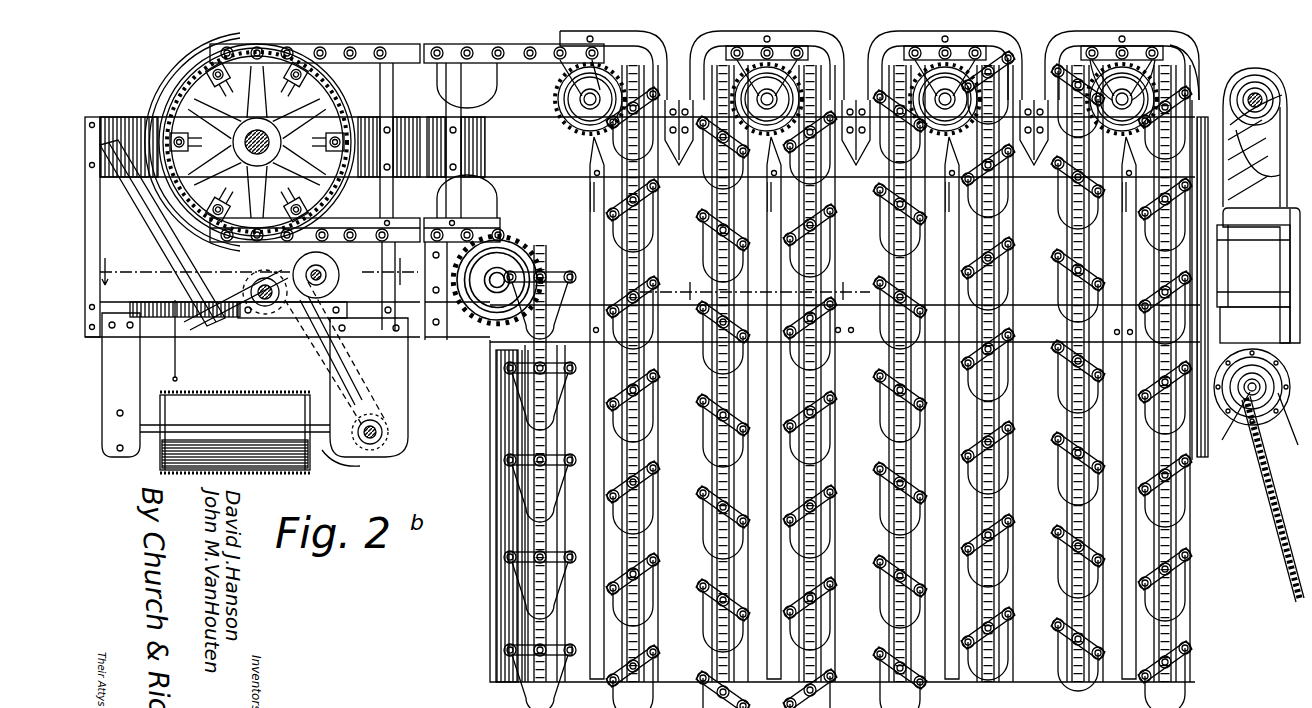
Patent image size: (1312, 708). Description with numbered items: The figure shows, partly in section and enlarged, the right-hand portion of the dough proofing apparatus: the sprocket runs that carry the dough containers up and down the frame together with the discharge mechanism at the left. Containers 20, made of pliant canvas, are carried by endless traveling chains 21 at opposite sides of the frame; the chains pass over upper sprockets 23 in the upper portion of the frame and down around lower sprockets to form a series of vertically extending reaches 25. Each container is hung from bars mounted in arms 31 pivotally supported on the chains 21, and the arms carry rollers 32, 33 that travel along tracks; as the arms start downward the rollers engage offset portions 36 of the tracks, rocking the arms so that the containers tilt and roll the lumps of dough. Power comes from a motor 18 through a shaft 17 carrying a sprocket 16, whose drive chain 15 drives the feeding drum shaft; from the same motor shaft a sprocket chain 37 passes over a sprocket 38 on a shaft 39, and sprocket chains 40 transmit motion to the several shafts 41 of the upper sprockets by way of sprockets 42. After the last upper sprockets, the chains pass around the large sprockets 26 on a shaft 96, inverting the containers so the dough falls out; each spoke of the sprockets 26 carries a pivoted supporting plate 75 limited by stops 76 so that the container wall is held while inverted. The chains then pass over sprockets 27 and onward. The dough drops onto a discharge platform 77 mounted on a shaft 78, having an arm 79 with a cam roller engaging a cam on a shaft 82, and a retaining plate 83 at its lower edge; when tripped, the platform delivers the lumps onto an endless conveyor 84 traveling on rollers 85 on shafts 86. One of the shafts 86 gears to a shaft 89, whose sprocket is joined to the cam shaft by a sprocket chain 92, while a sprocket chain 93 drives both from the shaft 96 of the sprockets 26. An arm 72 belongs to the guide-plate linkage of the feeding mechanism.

The drive chain 15 is at (1277, 500).
The sprocket 16 is at (1268, 412).
The motor shaft 17 is at (945, 365).
The motor 18 is at (1255, 325).
The containers 20 is at (198, 88).
The endless traveling chains 21 is at (414, 46).
The upper sprockets 23 is at (584, 78).
The vertically extending reaches 25 is at (718, 560).
The large sprockets 26 is at (335, 90).
The sprockets 27 is at (488, 318).
The arms 31 is at (1062, 446).
The rollers 32 is at (1034, 168).
The rollers 33 is at (1025, 150).
The offset portions 36 is at (1033, 95).
The sprocket chain 37 is at (1258, 268).
The sprocket 38 is at (1255, 137).
The shaft 39 is at (1258, 90).
The sprocket chains 40 is at (908, 72).
The shafts 41 is at (1110, 88).
The sprockets 42 is at (1195, 60).
The arm 72 is at (263, 271).
The supporting plate 75 is at (257, 142).
The stops 76 is at (236, 47).
The discharge platform 77 is at (245, 316).
The shaft 78 is at (251, 290).
The arm 79 is at (292, 272).
The shaft 82 is at (292, 296).
The retaining plate 83 is at (150, 228).
The endless conveyor 84 is at (270, 471).
The rollers 85 is at (312, 466).
The shafts 86 is at (362, 456).
The shaft 89 is at (384, 432).
The sprocket chain 92 is at (315, 360).
The sprocket chain 93 is at (340, 222).
The shaft 96 is at (282, 142).